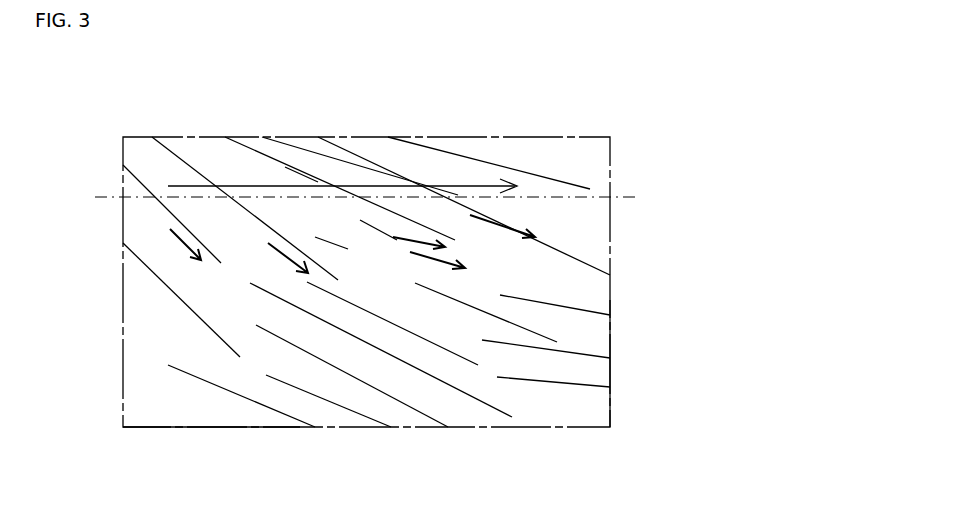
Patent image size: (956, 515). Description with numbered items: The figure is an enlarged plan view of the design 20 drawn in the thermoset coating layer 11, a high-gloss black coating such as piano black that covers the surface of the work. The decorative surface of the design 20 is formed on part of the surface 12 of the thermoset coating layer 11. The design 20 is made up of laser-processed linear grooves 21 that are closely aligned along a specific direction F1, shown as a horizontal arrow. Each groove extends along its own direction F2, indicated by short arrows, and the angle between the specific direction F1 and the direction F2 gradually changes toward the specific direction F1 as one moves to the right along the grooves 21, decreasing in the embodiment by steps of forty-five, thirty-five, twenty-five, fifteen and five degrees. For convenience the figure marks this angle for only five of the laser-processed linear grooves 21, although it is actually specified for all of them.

The thermoset coating layer 11 is at (128, 292).
The surface of the thermoset coating layer 12 is at (613, 418).
The design 20 is at (153, 432).
The laser-processed linear grooves 21 is at (301, 141).
The specific direction F1 is at (377, 186).
The direction in which the grooves extend F2 is at (190, 240).